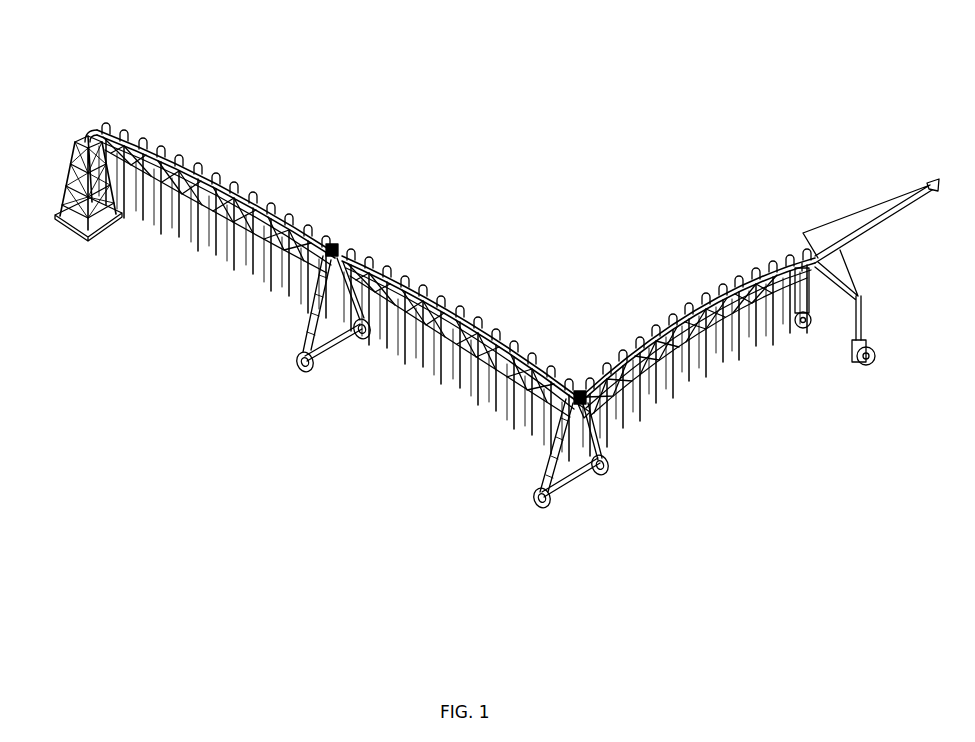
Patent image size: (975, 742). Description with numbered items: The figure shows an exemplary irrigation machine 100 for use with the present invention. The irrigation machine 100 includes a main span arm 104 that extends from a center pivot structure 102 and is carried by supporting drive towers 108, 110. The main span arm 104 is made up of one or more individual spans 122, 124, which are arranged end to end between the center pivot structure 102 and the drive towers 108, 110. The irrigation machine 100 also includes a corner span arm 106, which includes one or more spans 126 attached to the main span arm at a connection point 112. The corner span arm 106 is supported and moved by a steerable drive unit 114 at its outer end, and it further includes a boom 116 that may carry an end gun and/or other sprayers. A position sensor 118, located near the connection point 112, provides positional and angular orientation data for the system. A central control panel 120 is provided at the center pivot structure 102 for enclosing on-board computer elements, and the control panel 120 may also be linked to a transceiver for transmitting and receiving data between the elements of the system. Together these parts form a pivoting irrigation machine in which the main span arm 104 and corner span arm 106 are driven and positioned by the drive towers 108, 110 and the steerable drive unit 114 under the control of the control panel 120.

The irrigation machine 100 is at (690, 42).
The center pivot structure 102 is at (78, 152).
The main span arm 104 is at (331, 160).
The corner span arm 106 is at (666, 236).
The drive tower 108 is at (305, 342).
The drive tower 110 is at (540, 470).
The connection point 112 is at (583, 413).
The steerable drive unit 114 is at (857, 294).
The boom 116 is at (870, 217).
The position sensor 118 is at (577, 398).
The central control panel 120 is at (80, 202).
The individual span 122 is at (203, 163).
The individual span 124 is at (508, 333).
The span 126 is at (615, 357).